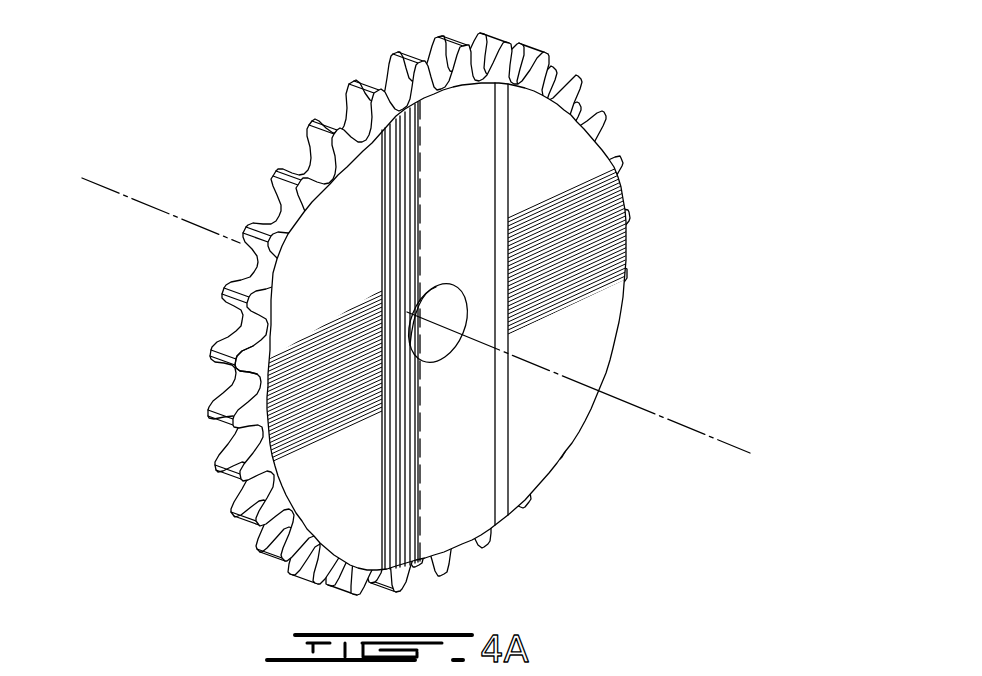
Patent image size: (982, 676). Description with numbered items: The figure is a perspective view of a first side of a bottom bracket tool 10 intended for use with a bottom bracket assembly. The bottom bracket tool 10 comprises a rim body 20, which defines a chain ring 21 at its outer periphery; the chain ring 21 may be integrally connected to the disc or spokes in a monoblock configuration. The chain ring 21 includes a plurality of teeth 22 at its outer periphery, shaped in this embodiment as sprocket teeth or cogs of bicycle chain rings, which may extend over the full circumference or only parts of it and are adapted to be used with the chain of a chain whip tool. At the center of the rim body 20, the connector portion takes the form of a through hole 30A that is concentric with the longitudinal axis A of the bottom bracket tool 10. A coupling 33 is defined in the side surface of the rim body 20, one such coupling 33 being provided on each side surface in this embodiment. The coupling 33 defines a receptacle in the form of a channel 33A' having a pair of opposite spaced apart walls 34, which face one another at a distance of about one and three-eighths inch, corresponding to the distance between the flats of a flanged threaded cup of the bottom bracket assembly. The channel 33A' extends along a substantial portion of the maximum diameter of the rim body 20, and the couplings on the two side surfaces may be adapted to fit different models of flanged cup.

The bottom bracket tool 10 is at (398, 303).
The rim body 20 is at (603, 295).
The chain ring 21 is at (186, 463).
The teeth 22 is at (227, 312).
The through hole 30A is at (446, 352).
The coupling 33 is at (470, 454).
The channel 33A' is at (590, 304).
The opposite spaced apart walls 34 is at (490, 144).
The longitudinal axis A is at (724, 442).